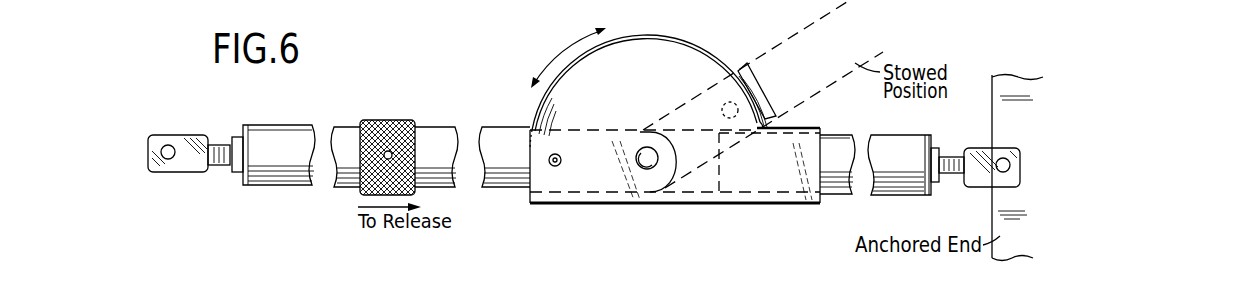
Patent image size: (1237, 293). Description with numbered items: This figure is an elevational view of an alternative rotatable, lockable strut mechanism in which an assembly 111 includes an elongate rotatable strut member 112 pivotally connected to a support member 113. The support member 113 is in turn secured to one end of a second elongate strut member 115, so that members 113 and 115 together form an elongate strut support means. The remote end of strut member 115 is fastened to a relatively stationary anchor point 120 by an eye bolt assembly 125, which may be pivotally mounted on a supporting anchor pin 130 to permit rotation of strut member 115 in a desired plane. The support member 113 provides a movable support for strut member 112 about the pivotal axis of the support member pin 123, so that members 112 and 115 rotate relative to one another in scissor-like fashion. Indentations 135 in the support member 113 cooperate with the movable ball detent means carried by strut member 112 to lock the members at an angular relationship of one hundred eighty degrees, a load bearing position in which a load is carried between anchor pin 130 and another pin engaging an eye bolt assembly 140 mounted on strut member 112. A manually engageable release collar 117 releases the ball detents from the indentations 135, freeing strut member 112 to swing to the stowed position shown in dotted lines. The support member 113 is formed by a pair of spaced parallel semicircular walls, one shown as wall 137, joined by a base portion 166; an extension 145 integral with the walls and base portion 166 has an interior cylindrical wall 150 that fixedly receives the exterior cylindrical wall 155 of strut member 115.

The assembly 111 is at (513, 78).
The rotatable strut member 112 is at (253, 188).
The support member 113 is at (727, 208).
The second elongate strut member 115 is at (839, 198).
The release collar 117 is at (370, 120).
The anchor point 120 is at (986, 197).
The support member pin 123 is at (656, 167).
The eye bolt assembly 125 is at (960, 143).
The anchor pin 130 is at (1000, 159).
The indentations 135 is at (556, 165).
The semicircular wall 137 is at (661, 52).
The eye bolt assembly 140 is at (178, 174).
The extension 145 is at (814, 144).
The interior cylindrical wall 150 is at (828, 137).
The exterior cylindrical wall 155 is at (727, 128).
The base portion 166 is at (748, 198).